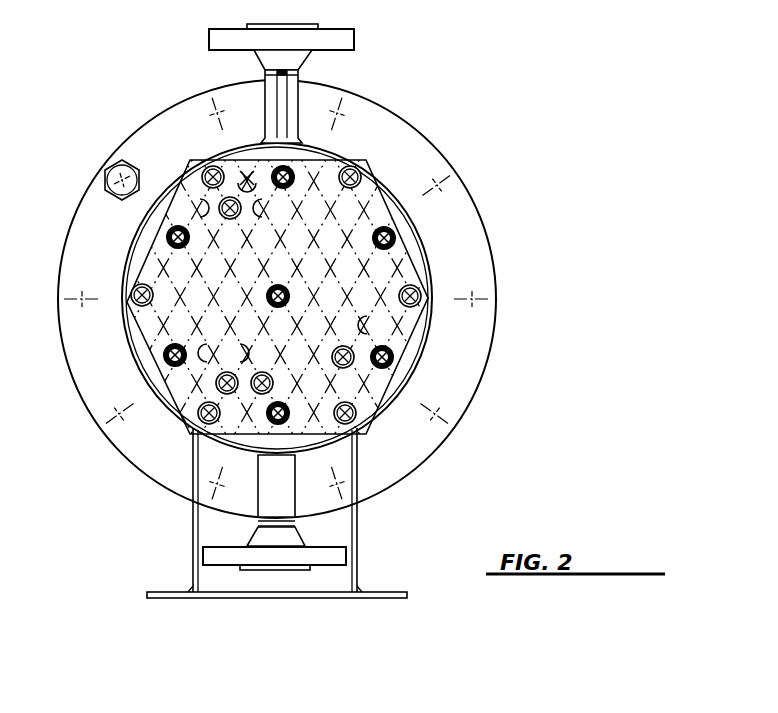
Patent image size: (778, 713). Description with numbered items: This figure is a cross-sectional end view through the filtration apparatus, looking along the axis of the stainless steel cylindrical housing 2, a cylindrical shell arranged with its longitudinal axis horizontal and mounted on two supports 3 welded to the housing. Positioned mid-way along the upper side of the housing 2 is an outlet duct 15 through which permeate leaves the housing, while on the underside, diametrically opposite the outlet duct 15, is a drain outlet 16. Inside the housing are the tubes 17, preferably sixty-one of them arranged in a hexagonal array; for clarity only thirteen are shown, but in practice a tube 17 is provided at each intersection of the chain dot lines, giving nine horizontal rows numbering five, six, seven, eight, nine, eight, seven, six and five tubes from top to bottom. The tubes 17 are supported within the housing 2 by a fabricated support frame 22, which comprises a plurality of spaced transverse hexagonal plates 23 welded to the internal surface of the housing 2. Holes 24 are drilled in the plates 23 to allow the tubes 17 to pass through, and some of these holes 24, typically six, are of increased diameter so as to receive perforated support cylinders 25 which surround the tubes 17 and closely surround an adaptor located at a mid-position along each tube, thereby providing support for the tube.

The cylindrical housing 2 is at (422, 232).
The supports 3 is at (357, 527).
The outlet duct 15 is at (304, 24).
The drain outlet 16 is at (212, 557).
The tubes 17 is at (383, 229).
The support frame 22 is at (445, 340).
The hexagonal plates 23 is at (377, 385).
The holes 24 is at (362, 410).
The perforated support cylinders 25 is at (392, 364).